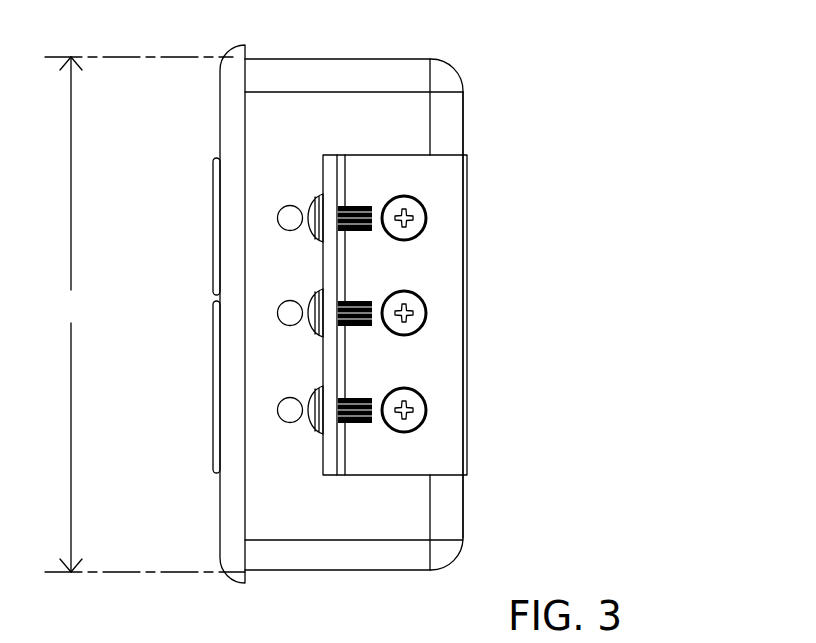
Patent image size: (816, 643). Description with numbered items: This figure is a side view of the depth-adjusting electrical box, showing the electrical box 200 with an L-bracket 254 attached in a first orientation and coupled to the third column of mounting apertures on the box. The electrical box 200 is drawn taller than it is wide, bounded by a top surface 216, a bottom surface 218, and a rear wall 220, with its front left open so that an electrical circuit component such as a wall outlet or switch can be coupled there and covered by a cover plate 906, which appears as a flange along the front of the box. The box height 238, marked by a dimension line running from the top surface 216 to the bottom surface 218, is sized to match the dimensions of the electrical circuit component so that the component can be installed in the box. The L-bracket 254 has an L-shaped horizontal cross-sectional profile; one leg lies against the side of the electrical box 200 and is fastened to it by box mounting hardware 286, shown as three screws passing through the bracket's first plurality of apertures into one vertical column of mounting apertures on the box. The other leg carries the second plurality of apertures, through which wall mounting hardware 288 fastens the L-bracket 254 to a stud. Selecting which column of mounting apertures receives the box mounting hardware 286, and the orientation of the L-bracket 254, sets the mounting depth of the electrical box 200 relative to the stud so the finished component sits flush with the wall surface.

The electrical box 200 is at (403, 123).
The top surface 216 is at (400, 59).
The bottom surface 218 is at (393, 570).
The rear wall 220 is at (463, 515).
The box height 238 is at (145, 314).
The L-bracket 254 is at (467, 395).
The box mounting hardware 286 is at (421, 394).
The wall mounting hardware 288 is at (311, 241).
The cover plate 906 is at (220, 123).